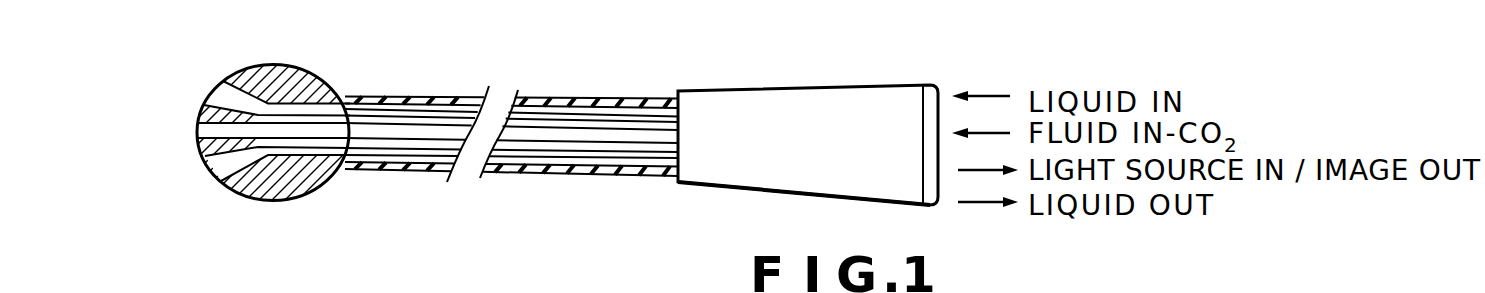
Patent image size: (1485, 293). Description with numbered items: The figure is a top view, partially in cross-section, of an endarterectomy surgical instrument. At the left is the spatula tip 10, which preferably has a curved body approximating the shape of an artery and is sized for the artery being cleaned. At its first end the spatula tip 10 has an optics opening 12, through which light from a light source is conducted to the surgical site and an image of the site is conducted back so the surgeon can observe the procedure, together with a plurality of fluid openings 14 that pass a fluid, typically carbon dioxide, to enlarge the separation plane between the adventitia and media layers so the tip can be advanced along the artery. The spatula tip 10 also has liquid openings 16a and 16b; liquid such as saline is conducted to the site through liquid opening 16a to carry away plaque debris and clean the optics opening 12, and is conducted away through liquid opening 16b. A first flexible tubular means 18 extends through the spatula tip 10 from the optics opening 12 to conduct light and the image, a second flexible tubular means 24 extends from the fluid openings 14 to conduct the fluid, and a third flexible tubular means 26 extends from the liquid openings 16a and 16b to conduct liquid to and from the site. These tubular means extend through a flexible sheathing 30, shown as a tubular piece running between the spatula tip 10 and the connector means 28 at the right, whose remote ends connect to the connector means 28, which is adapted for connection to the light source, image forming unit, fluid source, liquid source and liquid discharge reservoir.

The spatula tip 10 is at (290, 66).
The optics opening 12 is at (196, 130).
The fluid openings 14 is at (220, 78).
The liquid opening 16a is at (207, 98).
The liquid opening 16b is at (200, 163).
The first flexible tubular means 18 is at (407, 145).
The second flexible tubular means 24 is at (650, 115).
The third flexible tubular means 26 is at (590, 117).
The connector means 28 is at (817, 86).
The flexible sheathing 30 is at (423, 98).